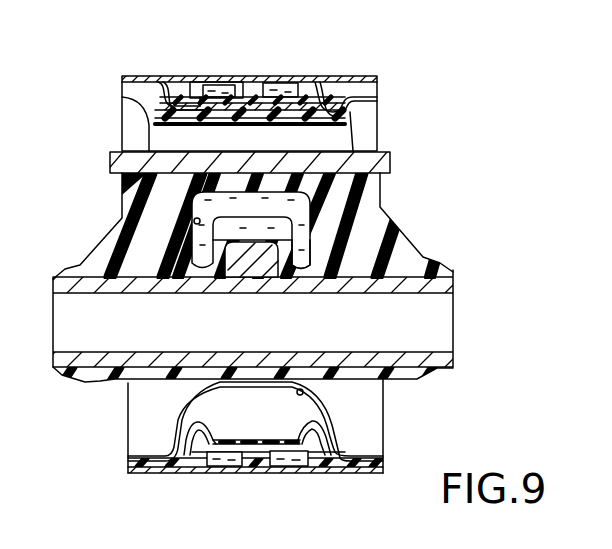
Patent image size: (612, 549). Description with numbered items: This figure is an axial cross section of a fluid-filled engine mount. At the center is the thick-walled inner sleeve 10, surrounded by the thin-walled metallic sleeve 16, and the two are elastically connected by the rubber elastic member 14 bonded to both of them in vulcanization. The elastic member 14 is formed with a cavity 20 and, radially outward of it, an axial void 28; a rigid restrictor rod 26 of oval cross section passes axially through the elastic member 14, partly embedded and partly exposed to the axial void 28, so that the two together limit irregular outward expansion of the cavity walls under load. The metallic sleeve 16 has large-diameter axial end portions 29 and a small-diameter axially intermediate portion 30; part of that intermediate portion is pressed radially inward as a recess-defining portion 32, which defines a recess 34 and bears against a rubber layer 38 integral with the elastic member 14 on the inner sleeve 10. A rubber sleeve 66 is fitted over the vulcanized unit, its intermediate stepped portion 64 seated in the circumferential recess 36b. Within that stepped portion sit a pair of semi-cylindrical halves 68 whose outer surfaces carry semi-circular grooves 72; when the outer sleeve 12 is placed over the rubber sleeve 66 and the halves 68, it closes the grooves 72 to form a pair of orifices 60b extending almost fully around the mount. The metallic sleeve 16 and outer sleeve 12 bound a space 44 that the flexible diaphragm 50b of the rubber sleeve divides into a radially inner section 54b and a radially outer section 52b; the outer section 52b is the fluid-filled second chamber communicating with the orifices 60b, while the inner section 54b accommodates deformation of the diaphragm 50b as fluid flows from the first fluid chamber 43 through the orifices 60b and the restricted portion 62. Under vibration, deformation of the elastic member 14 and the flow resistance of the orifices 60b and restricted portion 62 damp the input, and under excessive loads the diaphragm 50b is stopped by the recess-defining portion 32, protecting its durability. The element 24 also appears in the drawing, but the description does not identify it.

The inner sleeve 10 is at (385, 281).
The outer sleeve 12 is at (147, 475).
The elastic member 14 is at (120, 242).
The metallic sleeve 16 is at (251, 264).
The cavity 20 is at (195, 222).
The stopper block 24 is at (247, 266).
The restrictor rod 26 is at (380, 160).
The axial void 28 is at (160, 136).
The axial end portions 29 is at (138, 83).
The axially intermediate portion 30 is at (262, 105).
The recess-defining portion 32 is at (235, 451).
The recess 34 is at (302, 388).
The circumferential recess 36b is at (312, 90).
The rubber layer 38 is at (147, 376).
The first fluid chamber 43 is at (248, 264).
The space 44 is at (306, 381).
The flexible diaphragm 50b is at (239, 440).
The second fluid chamber 52b is at (335, 426).
The radially inner section 54b is at (286, 381).
The orifices 60b is at (223, 467).
The restricted portion 62 is at (302, 262).
The intermediate stepped portion 64 is at (252, 102).
The rubber sleeve 66 is at (163, 64).
The semi-cylindrical halves 68 is at (188, 96).
The semi-circular grooves 72 is at (210, 88).